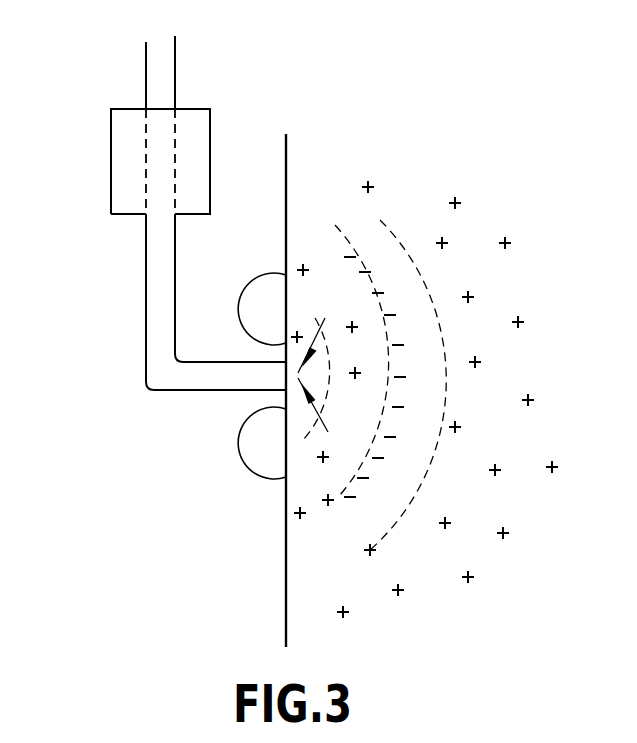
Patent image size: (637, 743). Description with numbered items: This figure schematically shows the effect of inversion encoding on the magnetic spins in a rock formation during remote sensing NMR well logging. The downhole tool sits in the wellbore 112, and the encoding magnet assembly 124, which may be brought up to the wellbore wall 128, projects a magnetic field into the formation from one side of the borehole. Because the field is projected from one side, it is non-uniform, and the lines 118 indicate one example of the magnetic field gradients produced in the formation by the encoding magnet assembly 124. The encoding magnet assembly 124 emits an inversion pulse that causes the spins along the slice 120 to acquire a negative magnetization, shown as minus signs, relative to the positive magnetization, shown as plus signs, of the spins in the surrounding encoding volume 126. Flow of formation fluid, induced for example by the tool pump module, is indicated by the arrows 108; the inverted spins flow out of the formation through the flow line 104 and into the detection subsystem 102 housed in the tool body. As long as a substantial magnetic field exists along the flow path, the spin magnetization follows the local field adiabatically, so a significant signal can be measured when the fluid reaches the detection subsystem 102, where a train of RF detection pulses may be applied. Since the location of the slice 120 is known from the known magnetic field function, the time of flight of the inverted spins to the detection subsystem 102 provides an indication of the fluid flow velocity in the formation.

The detection subsystem 102 is at (110, 150).
The flow line 104 is at (181, 386).
The arrows 108 is at (322, 320).
The wellbore 112 is at (188, 487).
The lines 118 is at (381, 220).
The slice 120 is at (359, 344).
The encoding magnet assembly 124 is at (262, 311).
The encoding volume 126 is at (525, 362).
The wellbore wall 128 is at (286, 602).